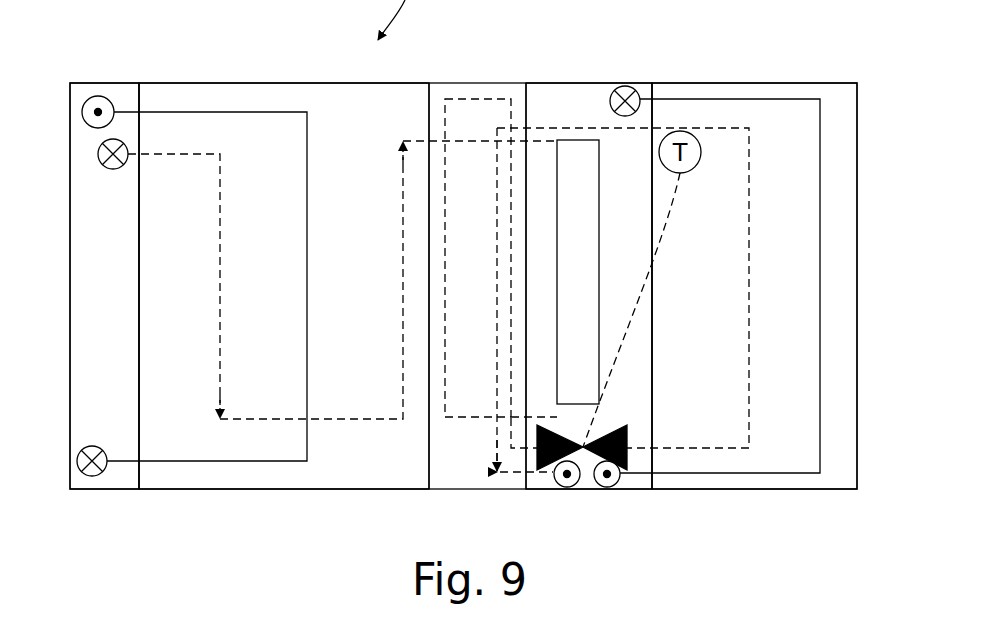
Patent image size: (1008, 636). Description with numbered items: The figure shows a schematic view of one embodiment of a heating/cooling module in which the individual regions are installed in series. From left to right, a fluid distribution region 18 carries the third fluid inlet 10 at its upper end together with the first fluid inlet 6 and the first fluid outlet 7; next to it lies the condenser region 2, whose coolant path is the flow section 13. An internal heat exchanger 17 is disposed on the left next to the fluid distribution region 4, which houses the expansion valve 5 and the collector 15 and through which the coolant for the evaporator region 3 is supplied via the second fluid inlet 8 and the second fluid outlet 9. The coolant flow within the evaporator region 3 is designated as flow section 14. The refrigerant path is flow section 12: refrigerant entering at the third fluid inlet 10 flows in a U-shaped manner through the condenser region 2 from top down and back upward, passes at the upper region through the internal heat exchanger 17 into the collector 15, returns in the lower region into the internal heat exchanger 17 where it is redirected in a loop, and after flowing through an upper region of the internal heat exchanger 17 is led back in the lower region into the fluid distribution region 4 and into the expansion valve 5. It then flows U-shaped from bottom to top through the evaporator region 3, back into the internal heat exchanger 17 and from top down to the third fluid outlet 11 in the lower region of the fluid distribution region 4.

The condenser region 2 is at (257, 83).
The evaporator region 3 is at (727, 83).
The fluid distribution region 4 is at (597, 83).
The expansion valve 5 is at (587, 460).
The first fluid inlet 6 is at (92, 476).
The first fluid outlet 7 is at (98, 112).
The second fluid inlet 8 is at (627, 88).
The second fluid outlet 9 is at (609, 487).
The third fluid inlet 10 is at (98, 153).
The third fluid outlet 11 is at (555, 486).
The flow section 12 is at (237, 419).
The flow section 13 is at (166, 112).
The flow section 14 is at (820, 318).
The collector 15 is at (573, 153).
The internal heat exchanger 17 is at (463, 83).
The fluid distribution region 18 is at (95, 278).